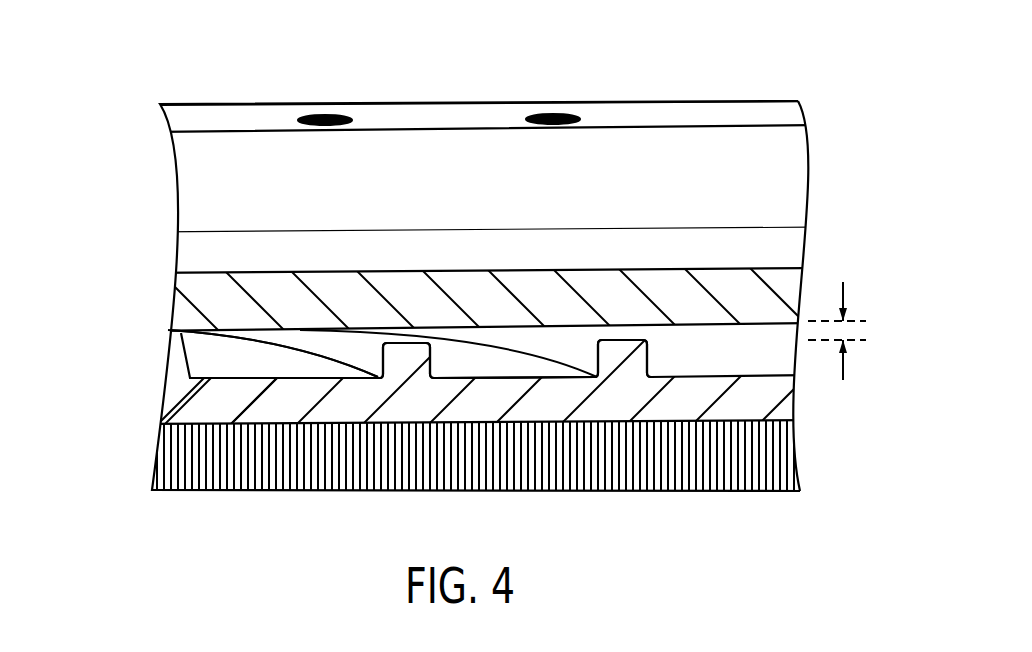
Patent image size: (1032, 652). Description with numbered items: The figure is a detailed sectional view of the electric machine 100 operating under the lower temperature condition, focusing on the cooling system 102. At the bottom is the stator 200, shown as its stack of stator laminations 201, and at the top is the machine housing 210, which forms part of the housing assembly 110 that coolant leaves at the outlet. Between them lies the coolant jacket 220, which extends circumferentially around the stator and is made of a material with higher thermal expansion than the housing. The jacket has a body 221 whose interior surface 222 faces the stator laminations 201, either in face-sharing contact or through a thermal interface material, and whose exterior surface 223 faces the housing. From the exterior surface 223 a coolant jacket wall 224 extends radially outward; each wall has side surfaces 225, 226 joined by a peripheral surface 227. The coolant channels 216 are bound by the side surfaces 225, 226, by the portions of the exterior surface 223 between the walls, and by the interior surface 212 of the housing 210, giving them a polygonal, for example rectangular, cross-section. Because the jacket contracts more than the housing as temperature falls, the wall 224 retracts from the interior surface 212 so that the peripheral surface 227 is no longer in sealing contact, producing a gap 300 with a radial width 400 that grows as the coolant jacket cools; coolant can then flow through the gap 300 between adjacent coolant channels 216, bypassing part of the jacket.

The electric machine 100 is at (748, 66).
The cooling system 102 is at (827, 255).
The housing assembly 110 is at (117, 93).
The stator 200 is at (762, 443).
The stator laminations 201 is at (704, 458).
The machine housing 210 is at (195, 288).
The interior surface of the housing 212 is at (547, 327).
The coolant channels 216 is at (510, 353).
The coolant jacket 220 is at (172, 368).
The body of the coolant jacket 221 is at (253, 413).
The interior surface of the coolant jacket body 222 is at (242, 418).
The exterior surface of the coolant jacket body 223 is at (228, 370).
The coolant jacket wall 224 is at (333, 345).
The side surface of the coolant jacket wall 225 is at (430, 343).
The side surface of the coolant jacket wall 226 is at (375, 378).
The peripheral surface of the coolant jacket wall 227 is at (615, 335).
The gap 300 is at (603, 328).
The radial width of the gap 400 is at (845, 367).